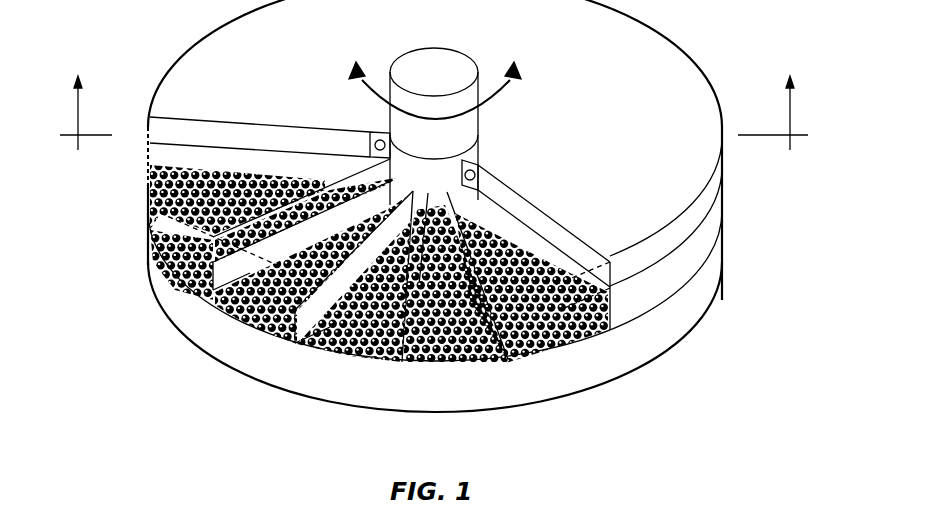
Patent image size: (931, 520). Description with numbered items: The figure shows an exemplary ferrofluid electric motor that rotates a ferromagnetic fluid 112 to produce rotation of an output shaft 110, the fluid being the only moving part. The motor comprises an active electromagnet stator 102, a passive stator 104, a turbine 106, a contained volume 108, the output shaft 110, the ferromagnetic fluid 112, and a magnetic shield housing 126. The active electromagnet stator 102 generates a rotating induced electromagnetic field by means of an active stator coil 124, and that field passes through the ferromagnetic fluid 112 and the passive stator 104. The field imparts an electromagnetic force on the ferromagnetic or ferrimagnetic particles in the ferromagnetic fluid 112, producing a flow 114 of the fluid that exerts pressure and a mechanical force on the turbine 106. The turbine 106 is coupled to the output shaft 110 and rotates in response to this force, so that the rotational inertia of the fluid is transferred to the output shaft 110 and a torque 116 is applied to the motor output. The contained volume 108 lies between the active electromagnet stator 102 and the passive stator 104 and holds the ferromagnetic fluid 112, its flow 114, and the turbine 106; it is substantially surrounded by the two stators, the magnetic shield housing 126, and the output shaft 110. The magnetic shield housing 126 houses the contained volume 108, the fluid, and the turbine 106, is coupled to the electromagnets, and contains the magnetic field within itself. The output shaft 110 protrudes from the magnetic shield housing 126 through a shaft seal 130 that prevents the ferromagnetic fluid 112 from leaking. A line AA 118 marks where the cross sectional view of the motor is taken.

The active electromagnet stator 102 is at (156, 285).
The passive stator 104 is at (190, 74).
The turbine 106 is at (152, 218).
The contained volume 108 is at (506, 358).
The output shaft 110 is at (479, 84).
The ferromagnetic fluid 112 is at (232, 308).
The flow 114 is at (463, 362).
The torque 116 is at (515, 85).
The line AA 118 is at (790, 107).
The active stator coil 124 is at (600, 297).
The magnetic shield housing 126 is at (712, 224).
The shaft seal 130 is at (466, 159).